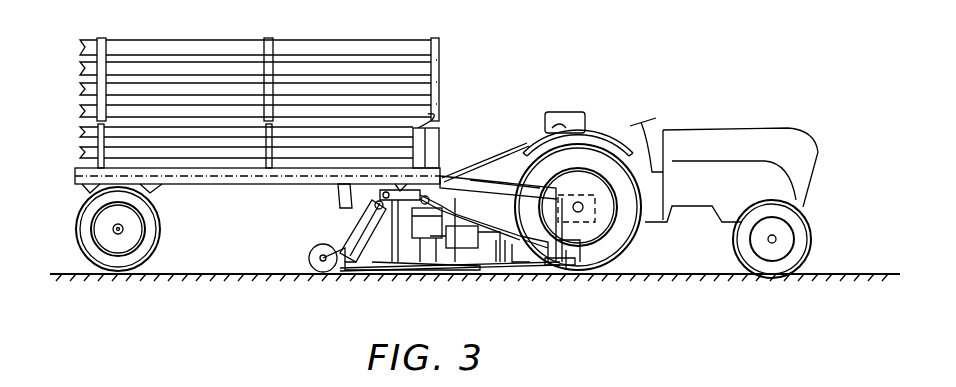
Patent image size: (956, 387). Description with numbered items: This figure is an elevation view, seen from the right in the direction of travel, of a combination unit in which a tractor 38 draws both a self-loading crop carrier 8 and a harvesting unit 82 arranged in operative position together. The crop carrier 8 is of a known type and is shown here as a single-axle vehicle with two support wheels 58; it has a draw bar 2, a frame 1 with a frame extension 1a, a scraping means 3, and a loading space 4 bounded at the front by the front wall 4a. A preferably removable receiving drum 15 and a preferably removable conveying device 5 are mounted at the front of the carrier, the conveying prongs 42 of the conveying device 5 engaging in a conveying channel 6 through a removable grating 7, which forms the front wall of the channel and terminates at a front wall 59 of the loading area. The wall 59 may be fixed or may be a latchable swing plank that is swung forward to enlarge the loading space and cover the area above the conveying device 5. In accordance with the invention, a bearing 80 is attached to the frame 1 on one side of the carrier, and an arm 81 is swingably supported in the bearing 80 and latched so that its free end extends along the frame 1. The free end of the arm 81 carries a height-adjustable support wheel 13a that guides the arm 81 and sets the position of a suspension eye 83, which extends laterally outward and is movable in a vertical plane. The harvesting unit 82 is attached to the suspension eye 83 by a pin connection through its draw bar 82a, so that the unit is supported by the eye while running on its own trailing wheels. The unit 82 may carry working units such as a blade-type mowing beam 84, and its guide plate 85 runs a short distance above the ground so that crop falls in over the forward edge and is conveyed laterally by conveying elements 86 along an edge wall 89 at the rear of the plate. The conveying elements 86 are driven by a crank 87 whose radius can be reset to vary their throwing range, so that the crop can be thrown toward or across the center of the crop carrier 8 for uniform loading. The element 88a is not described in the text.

The frame 1 is at (257, 197).
The frame extension 1a is at (438, 170).
The draw bar 2 is at (488, 181).
The scraping means 3 is at (181, 185).
The loading space 4 is at (80, 96).
The front wall 4a is at (435, 103).
The conveying device 5 is at (352, 214).
The conveying channel 6 is at (342, 196).
The removable grating 7 is at (374, 262).
The crop carrier 8 is at (265, 103).
The support wheel 13a is at (572, 250).
The receiving drum 15 is at (350, 268).
The tractor 38 is at (792, 130).
The conveying prongs 42 is at (364, 270).
The support wheels 58 is at (80, 237).
The front wall 59 is at (420, 127).
The bearing 80 is at (451, 171).
The arm 81 is at (521, 212).
The harvesting unit 82 is at (503, 262).
The draw bar 82a is at (520, 264).
The suspension eye 83 is at (548, 266).
The mowing beam 84 is at (562, 266).
The guide plate 85 is at (392, 270).
The conveying elements 86 is at (490, 262).
The crank 87 is at (458, 216).
The hitch housing 88a is at (430, 262).
The edge wall 89 is at (456, 262).